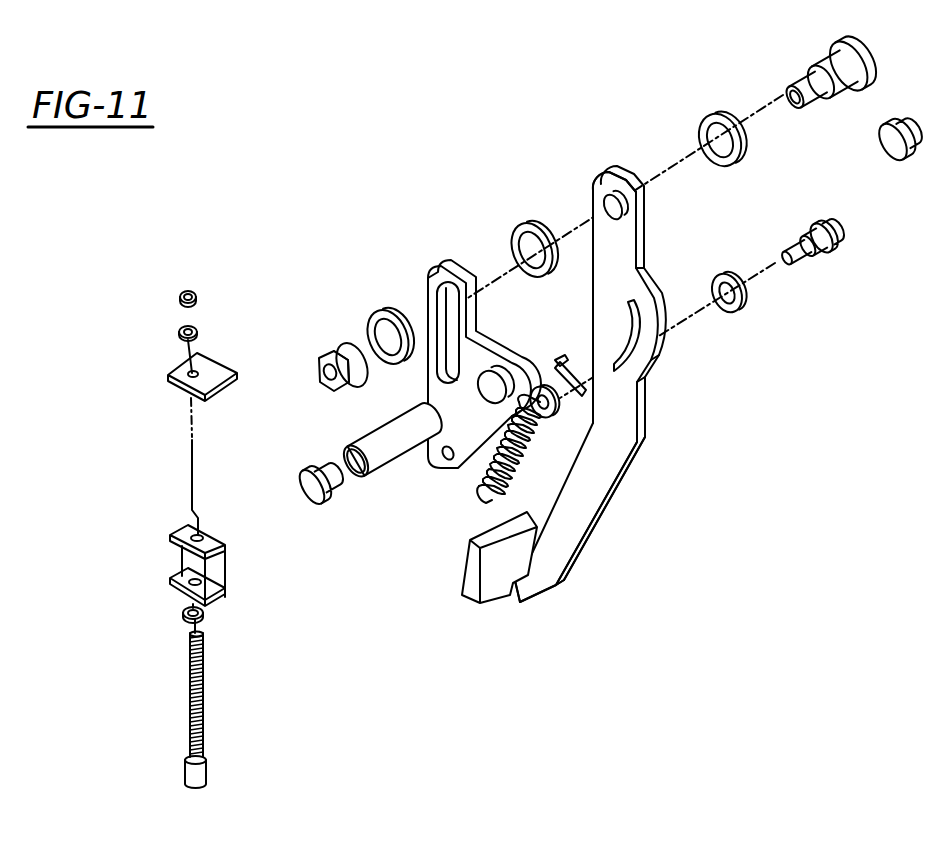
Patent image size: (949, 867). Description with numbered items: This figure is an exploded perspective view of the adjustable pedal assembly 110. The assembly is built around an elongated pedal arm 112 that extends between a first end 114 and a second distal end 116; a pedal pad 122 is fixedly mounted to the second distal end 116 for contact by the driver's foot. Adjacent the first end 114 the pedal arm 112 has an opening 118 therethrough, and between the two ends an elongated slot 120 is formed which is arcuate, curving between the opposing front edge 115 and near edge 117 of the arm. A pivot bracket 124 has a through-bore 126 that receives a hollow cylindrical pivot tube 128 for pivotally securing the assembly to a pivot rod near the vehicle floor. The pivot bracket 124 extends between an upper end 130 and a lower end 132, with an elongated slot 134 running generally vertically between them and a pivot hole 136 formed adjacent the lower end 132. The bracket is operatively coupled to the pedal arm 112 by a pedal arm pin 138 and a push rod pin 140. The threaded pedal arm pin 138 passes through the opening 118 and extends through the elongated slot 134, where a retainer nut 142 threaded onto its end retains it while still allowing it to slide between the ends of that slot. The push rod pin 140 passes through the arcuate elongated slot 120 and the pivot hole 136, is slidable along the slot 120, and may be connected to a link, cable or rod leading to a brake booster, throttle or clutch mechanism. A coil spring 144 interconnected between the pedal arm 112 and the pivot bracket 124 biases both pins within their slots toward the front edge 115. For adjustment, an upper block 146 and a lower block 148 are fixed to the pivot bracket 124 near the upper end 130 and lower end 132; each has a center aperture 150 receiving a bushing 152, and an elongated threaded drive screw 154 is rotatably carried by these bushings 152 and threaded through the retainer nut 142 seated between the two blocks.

The pedal assembly 110 is at (722, 99).
The pedal arm 112 is at (617, 495).
The first end 114 is at (617, 180).
The front edge 115 is at (600, 230).
The second distal end 116 is at (533, 590).
The near edge 117 is at (585, 540).
The opening 118 is at (600, 230).
The elongated slot 120 is at (660, 363).
The pedal pad 122 is at (467, 603).
The pivot bracket 124 is at (426, 262).
The through-bore 126 is at (495, 356).
The pivot tube 128 is at (360, 440).
The upper end 130 is at (448, 272).
The lower end 132 is at (435, 445).
The elongated slot 134 is at (424, 300).
The pivot hole 136 is at (435, 455).
The pedal arm pin 138 is at (870, 78).
The push rod pin 140 is at (833, 262).
The retainer nut 142 is at (332, 350).
The coil spring 144 is at (547, 452).
The upper block 146 is at (178, 385).
The lower block 148 is at (172, 545).
The center aperture 150 is at (197, 360).
The bushing 152 is at (183, 333).
The drive screw 154 is at (203, 728).